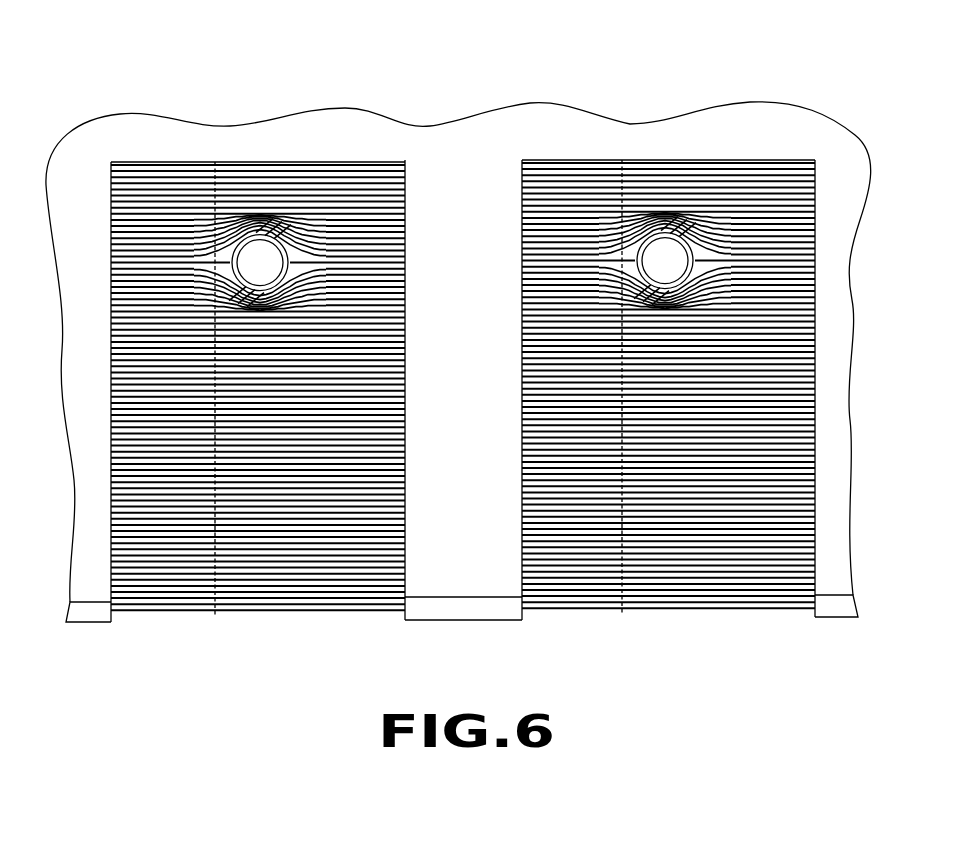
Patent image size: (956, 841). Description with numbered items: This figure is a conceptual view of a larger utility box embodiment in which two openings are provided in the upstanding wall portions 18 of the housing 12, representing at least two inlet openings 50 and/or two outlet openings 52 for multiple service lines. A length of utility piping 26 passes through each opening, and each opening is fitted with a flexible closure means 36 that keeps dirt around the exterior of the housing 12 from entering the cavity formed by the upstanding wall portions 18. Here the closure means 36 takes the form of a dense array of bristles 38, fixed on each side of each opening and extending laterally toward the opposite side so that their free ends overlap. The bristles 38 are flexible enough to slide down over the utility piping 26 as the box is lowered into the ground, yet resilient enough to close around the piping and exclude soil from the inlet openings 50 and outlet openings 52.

The housing 12 is at (528, 104).
The upstanding wall portions 18 is at (480, 302).
The utility piping 26 is at (287, 236).
The flexible closure means 36 is at (145, 150).
The bristles 38 is at (148, 604).
The inlet openings 50 is at (463, 428).
The outlet openings 52 is at (283, 636).